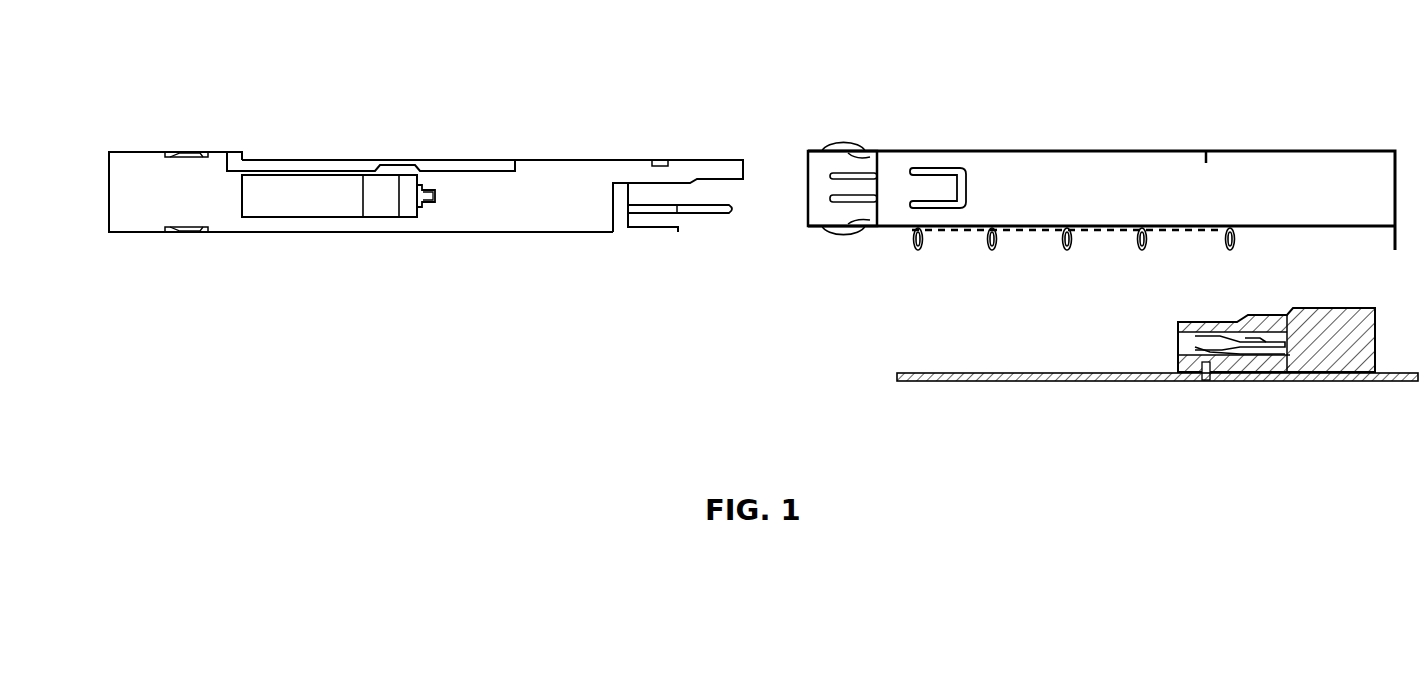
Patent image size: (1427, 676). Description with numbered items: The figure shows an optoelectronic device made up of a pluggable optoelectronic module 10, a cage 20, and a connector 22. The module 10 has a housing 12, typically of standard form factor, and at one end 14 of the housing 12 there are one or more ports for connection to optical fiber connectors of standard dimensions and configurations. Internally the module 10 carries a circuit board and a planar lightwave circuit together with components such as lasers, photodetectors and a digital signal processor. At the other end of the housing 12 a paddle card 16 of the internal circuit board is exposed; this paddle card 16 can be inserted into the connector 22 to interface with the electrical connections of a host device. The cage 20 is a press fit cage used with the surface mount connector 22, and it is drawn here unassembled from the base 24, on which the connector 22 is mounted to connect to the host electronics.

The optoelectronic module 10 is at (193, 79).
The housing 12 is at (406, 233).
The end of the housing 14 is at (108, 191).
The paddle card 16 is at (737, 208).
The cage 20 is at (878, 109).
The connector 22 is at (1353, 308).
The base 24 is at (1080, 382).